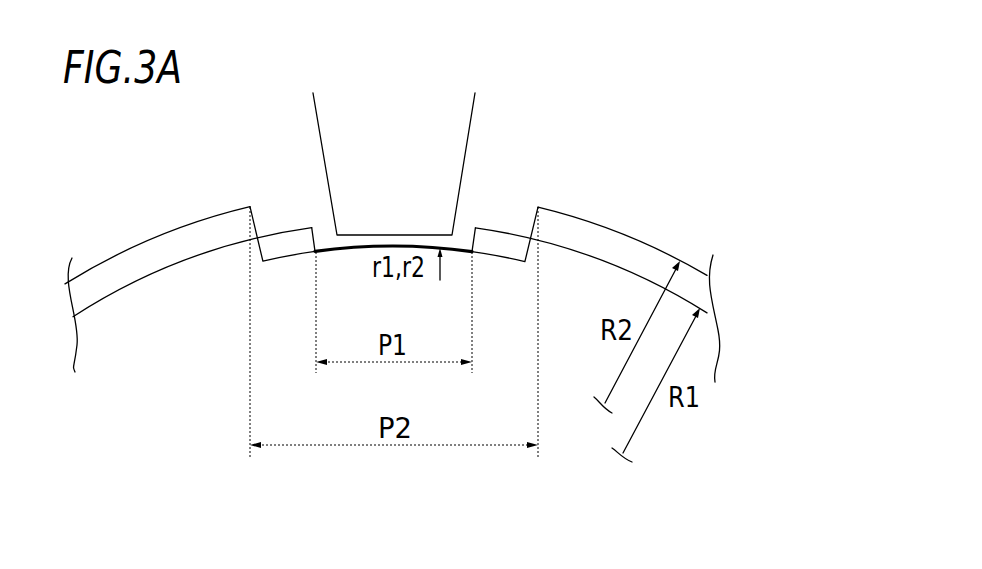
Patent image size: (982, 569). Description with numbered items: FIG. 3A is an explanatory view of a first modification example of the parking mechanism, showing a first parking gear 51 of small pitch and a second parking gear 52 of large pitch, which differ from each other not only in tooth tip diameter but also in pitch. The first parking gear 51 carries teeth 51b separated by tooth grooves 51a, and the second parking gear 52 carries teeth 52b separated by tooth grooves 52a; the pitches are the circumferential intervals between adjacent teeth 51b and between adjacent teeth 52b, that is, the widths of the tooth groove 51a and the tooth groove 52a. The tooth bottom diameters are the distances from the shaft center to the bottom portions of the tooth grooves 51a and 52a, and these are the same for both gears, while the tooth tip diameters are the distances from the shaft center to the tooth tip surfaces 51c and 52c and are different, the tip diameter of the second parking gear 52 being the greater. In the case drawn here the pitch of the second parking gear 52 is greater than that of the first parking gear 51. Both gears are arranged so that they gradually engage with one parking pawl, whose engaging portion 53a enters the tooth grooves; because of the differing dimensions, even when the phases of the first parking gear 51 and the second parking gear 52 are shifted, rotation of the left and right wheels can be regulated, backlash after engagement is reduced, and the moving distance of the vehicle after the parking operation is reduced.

The first parking gear 51 is at (188, 273).
The tooth groove 51a is at (328, 247).
The tooth 51b is at (157, 245).
The tooth tip surface 51c is at (138, 280).
The second parking gear 52 is at (666, 285).
The tooth groove 52a is at (498, 243).
The tooth 52b is at (622, 241).
The tooth tip surface 52c is at (670, 252).
The tooth / projection 53a is at (468, 142).